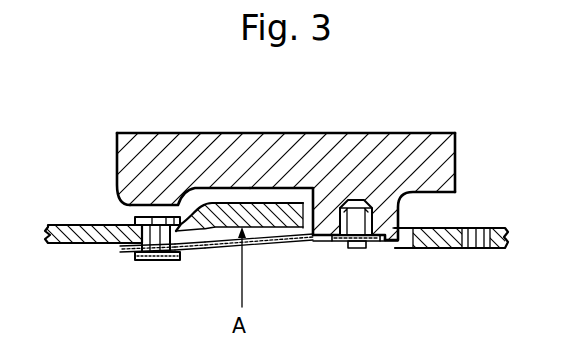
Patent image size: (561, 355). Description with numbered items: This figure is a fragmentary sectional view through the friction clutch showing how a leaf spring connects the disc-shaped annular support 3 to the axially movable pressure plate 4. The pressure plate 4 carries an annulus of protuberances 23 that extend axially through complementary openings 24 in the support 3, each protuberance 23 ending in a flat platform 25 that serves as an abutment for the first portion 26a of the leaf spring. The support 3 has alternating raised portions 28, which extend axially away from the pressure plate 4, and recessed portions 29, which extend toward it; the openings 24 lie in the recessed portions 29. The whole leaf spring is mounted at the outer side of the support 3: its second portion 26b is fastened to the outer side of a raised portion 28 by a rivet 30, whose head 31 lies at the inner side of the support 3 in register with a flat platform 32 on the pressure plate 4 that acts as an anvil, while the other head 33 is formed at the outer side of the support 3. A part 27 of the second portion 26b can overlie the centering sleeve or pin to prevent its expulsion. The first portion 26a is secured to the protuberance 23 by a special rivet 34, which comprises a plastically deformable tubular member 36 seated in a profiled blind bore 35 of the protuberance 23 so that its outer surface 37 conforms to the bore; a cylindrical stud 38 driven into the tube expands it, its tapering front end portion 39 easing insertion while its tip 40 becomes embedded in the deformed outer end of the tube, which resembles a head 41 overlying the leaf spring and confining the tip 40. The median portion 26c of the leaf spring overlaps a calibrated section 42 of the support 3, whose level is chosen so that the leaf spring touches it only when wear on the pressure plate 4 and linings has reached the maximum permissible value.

The support 3 is at (59, 244).
The pressure plate 4 is at (260, 154).
The protuberance 23 is at (399, 210).
The opening 24 is at (312, 214).
The platform 25 is at (335, 225).
The first portion of leaf spring 26a is at (413, 224).
The second portion of leaf spring 26b is at (117, 253).
The median portion of leaf spring 26c is at (275, 249).
The part of second portion of leaf spring 27 is at (138, 240).
The raised portion 28 is at (200, 253).
The recessed portion 29 is at (263, 216).
The rivet 30 is at (132, 256).
The head 31 is at (126, 172).
The platform 32 is at (163, 203).
The head 33 is at (153, 261).
The special rivet 34 is at (380, 148).
The blind bore 35 is at (460, 170).
The tubular member 36 is at (372, 250).
The outer surface 37 is at (347, 241).
The stud 38 is at (430, 138).
The front end portion 39 is at (352, 215).
The tip 40 is at (362, 255).
The head 41 is at (392, 251).
The calibrated section 42 is at (302, 250).